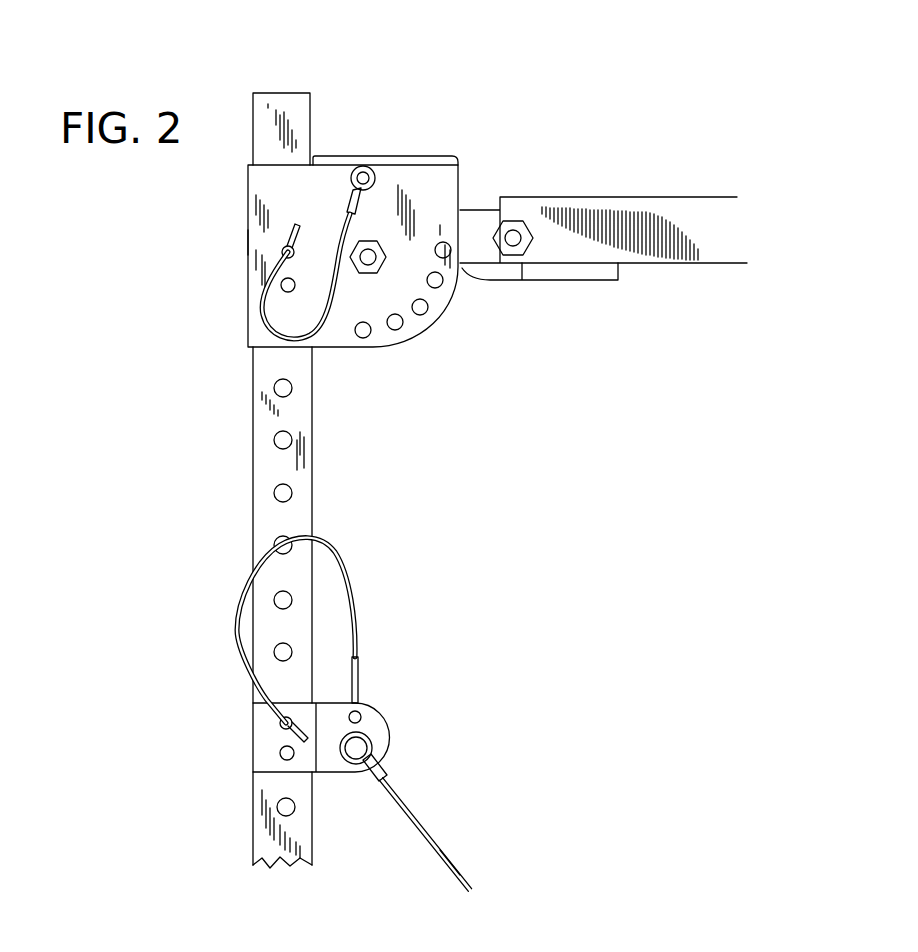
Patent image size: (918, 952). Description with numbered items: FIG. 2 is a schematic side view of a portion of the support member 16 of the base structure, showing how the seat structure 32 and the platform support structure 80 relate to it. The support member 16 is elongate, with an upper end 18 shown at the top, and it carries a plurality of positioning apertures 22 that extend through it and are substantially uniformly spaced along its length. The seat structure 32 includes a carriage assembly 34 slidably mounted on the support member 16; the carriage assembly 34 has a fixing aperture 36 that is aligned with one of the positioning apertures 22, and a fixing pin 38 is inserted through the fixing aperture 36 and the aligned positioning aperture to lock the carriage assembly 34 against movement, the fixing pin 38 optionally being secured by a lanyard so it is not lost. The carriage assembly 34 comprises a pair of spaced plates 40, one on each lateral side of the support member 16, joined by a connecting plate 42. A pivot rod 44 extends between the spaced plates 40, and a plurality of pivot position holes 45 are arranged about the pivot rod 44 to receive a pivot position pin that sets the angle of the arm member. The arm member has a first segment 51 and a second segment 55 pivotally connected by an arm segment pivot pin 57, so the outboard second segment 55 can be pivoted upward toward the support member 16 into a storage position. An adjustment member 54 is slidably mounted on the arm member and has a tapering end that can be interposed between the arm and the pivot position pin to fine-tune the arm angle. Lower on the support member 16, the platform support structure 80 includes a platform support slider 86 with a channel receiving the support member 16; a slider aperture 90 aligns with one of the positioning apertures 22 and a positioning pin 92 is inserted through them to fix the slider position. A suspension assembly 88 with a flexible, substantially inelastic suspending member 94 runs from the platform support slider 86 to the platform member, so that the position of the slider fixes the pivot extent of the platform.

The support member 16 is at (302, 513).
The upper end 18 is at (293, 118).
The positioning apertures 22 is at (292, 388).
The seat structure 32 is at (562, 110).
The carriage assembly 34 is at (257, 215).
The fixing aperture 36 is at (266, 314).
The fixing pin 38 is at (284, 255).
The spaced plates 40 is at (445, 180).
The connecting plate 42 is at (247, 242).
The pivot rod 44 is at (377, 262).
The pivot position holes 45 is at (403, 323).
The first segment 51 is at (477, 222).
The adjustment member 54 is at (560, 273).
The second segment 55 is at (693, 210).
The arm segment pivot pin 57 is at (522, 225).
The platform support structure 80 is at (455, 755).
The platform support slider 86 is at (375, 720).
The suspension assembly 88 is at (453, 828).
The slider aperture 90 is at (280, 753).
The positioning pin 92 is at (280, 723).
The suspending member 94 is at (442, 861).